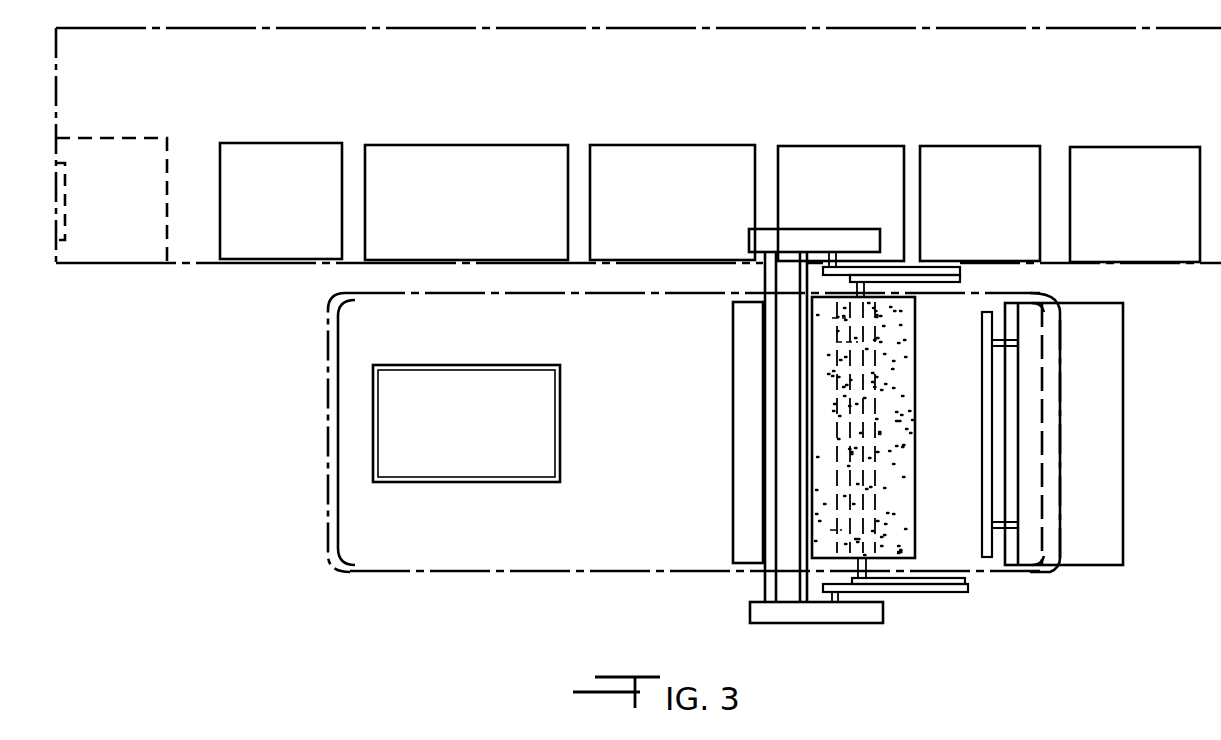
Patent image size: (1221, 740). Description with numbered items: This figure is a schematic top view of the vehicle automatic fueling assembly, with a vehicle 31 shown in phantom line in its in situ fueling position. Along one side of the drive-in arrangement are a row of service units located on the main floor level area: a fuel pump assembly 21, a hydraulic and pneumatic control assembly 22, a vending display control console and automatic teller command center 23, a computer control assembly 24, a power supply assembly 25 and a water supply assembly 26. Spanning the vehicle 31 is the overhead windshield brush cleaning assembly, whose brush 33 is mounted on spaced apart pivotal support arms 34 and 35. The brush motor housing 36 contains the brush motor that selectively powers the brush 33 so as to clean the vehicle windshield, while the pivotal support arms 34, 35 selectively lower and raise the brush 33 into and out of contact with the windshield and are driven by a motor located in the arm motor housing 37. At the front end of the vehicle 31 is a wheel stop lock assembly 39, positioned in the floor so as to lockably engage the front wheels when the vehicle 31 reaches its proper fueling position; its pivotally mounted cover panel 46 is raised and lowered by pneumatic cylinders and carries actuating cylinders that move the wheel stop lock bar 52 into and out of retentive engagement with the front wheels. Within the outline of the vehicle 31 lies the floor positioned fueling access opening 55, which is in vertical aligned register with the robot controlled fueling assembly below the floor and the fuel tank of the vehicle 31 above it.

The fuel pump assembly 21 is at (294, 143).
The hydraulic and pneumatic control assembly 22 is at (458, 145).
The vending display control console and automatic teller command center 23 is at (663, 145).
The computer control assembly 24 is at (827, 146).
The power supply assembly 25 is at (962, 146).
The water supply assembly 26 is at (1112, 147).
The vehicle 31 is at (540, 571).
The brush 33 is at (915, 495).
The pivotal support arm 34 is at (925, 592).
The pivotal support arm 35 is at (943, 266).
The brush motor housing 36 is at (835, 229).
The arm motor housing 37 is at (835, 625).
The wheel stop lock assembly 39 is at (1124, 442).
The wheel stop lock assembly cover panel 46 is at (1090, 545).
The wheel stop lock bar 52 is at (982, 410).
The fueling access opening 55 is at (560, 408).